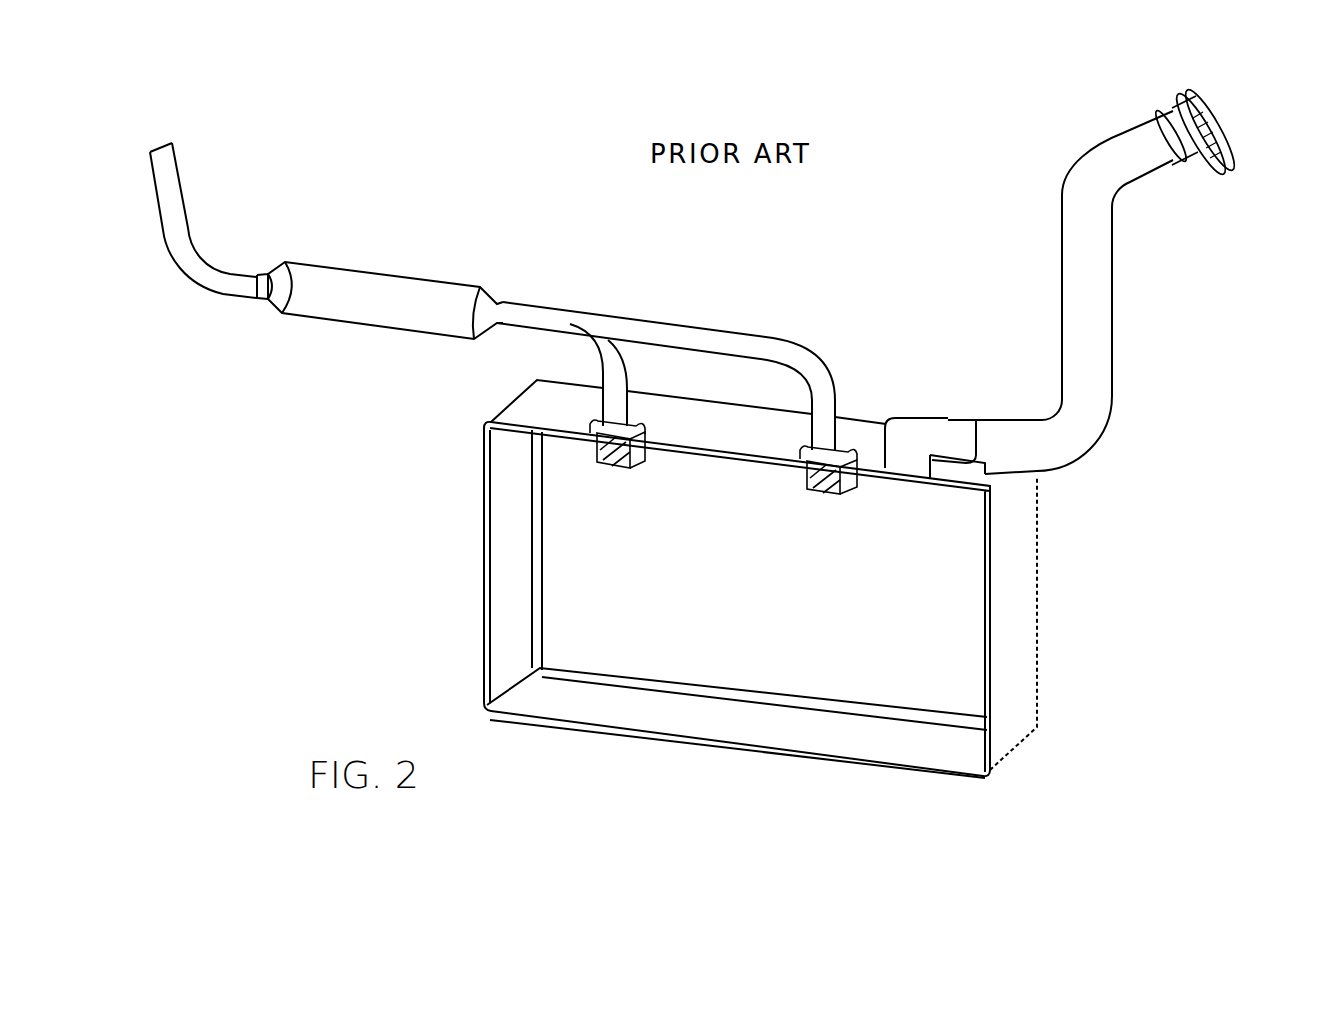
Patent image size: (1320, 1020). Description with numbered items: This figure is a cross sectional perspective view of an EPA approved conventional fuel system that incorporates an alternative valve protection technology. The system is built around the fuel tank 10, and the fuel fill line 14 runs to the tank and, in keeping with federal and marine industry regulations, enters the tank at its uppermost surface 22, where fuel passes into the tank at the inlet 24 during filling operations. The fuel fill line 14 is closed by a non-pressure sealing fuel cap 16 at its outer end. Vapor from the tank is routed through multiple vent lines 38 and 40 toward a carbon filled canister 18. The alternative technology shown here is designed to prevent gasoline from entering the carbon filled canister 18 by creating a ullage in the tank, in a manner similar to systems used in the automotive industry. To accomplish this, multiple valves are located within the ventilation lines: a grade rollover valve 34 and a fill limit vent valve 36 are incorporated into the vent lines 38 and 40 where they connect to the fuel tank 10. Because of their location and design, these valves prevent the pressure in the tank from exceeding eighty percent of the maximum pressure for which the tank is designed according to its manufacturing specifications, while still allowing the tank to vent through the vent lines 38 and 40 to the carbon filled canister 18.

The fuel tank 10 is at (722, 612).
The fuel fill line 14 is at (1082, 294).
The fuel cap 16 is at (1210, 124).
The carbon filled canister 18 is at (355, 304).
The uppermost surface 22 is at (866, 432).
The inlet 24 is at (920, 478).
The grade rollover valve 34 is at (620, 470).
The fill limit vent valve 36 is at (830, 496).
The vent line 38 is at (710, 346).
The vent line 40 is at (600, 370).